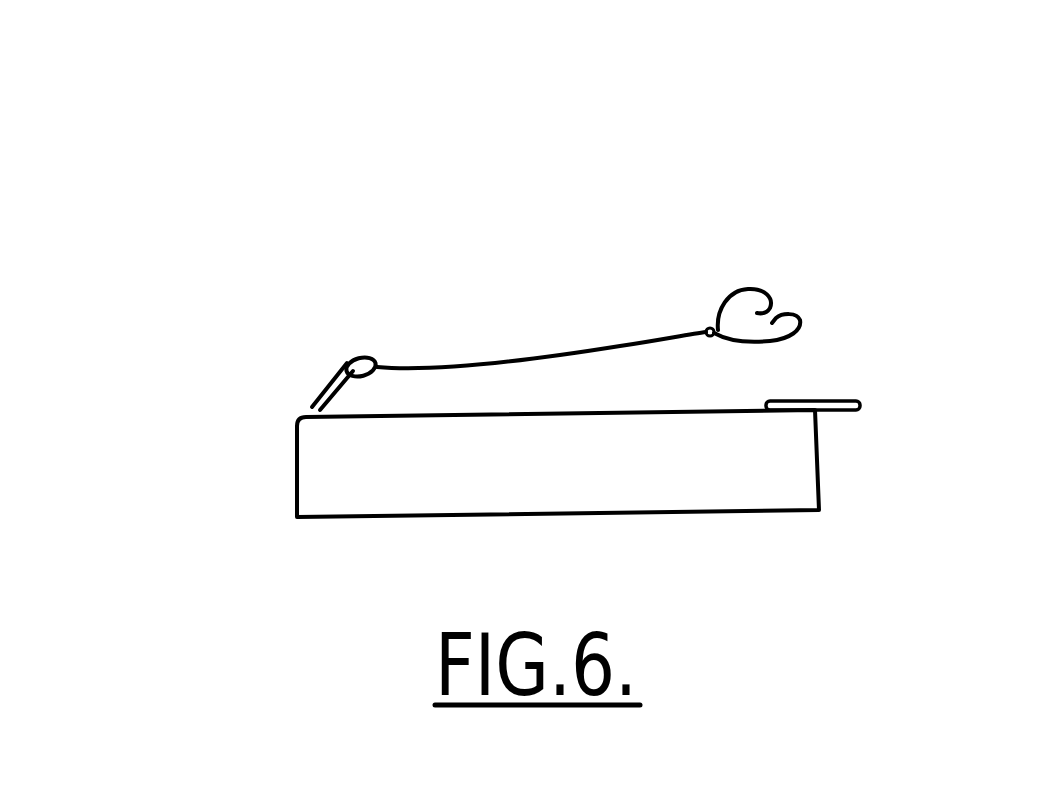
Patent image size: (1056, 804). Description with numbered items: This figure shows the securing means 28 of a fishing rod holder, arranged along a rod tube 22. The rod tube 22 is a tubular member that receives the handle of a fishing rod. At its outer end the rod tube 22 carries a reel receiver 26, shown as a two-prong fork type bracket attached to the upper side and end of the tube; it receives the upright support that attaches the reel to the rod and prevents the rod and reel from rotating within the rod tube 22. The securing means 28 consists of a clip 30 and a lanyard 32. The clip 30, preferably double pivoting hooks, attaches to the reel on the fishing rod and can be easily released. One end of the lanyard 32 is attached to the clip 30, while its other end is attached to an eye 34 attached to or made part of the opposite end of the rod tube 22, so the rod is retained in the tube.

The rod tube 22 is at (397, 487).
The reel receiver 26 is at (843, 403).
The securing means 28 is at (788, 100).
The clip 30 is at (858, 240).
The lanyard 32 is at (495, 360).
The eye 34 is at (335, 385).